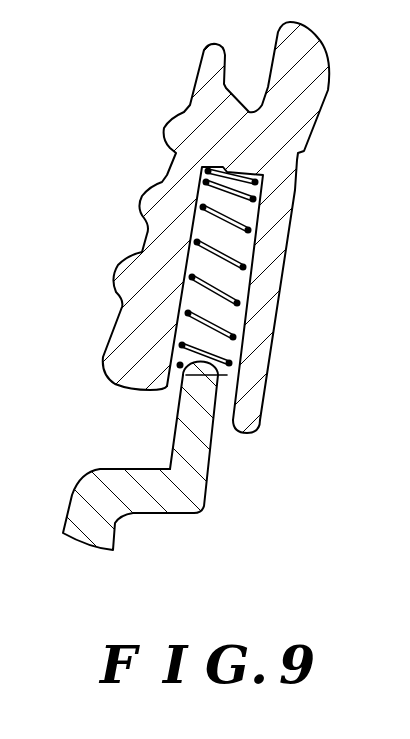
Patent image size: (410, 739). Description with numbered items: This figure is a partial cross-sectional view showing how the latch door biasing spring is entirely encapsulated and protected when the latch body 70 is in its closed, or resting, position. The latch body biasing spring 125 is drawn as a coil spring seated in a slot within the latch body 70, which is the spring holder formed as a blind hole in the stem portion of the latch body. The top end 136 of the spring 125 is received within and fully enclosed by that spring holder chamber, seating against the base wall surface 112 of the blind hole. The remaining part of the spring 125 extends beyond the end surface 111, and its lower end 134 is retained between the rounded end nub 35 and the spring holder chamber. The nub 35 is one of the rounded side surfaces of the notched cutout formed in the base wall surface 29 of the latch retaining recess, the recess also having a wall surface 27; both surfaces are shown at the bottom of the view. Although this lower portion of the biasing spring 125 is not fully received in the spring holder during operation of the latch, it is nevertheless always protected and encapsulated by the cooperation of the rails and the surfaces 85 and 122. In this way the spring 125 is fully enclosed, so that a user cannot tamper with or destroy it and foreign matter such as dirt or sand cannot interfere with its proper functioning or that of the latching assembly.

The latch body 70 is at (307, 96).
The surface 85 is at (187, 287).
The base wall surface 112 is at (218, 170).
The top end 136 is at (257, 183).
The latch body biasing spring 125 is at (250, 231).
The end surface 111 is at (240, 288).
The lower end 134 is at (228, 376).
The surface 122 is at (236, 398).
The side surface 35 is at (198, 372).
The base wall surface 29 is at (161, 423).
The wall surface 27 is at (100, 459).